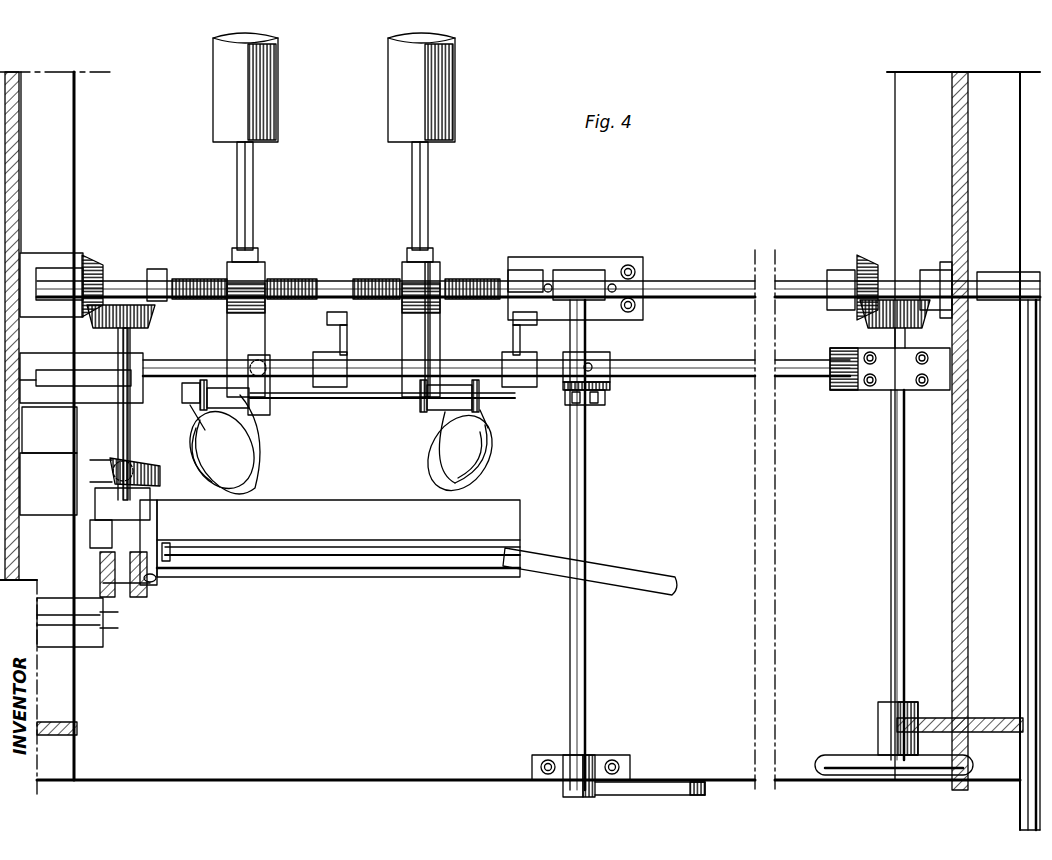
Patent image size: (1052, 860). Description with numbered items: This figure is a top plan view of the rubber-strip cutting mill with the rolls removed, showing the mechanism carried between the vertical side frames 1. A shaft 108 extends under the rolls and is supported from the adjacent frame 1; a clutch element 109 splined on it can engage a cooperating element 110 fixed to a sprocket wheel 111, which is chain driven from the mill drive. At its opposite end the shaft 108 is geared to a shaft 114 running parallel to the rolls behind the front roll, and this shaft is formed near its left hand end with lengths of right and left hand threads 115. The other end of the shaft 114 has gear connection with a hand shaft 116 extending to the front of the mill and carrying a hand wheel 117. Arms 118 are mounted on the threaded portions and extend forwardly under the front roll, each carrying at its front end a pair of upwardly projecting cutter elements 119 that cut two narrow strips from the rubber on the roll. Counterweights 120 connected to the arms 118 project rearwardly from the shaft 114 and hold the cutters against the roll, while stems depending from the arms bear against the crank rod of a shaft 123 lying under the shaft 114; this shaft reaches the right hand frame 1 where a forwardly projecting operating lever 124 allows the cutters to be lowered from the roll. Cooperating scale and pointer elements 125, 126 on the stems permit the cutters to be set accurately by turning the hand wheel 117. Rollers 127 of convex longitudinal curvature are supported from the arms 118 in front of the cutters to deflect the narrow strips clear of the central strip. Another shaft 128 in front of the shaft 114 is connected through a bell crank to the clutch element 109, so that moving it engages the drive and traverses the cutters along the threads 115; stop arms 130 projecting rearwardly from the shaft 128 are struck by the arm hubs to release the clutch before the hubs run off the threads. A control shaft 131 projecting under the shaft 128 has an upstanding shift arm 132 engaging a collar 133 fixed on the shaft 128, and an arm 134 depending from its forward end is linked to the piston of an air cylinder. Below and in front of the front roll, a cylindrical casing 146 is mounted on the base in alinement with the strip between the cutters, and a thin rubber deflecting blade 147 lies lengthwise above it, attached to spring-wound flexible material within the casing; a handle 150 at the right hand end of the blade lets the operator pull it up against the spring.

The vertical side frame 1 is at (18, 177).
The shaft 108 is at (120, 427).
The clutch element 109 is at (113, 503).
The cooperating clutch element 110 is at (150, 530).
The sprocket wheel 111 is at (155, 578).
The shaft 114 is at (122, 287).
The right and left hand threads 115 is at (360, 280).
The hand shaft 116 is at (893, 572).
The hand wheel 117 is at (838, 762).
The arm 118 is at (235, 326).
The cutter element 119 is at (258, 392).
The counterweight 120 is at (272, 106).
The shaft 123 is at (970, 290).
The operating lever 124 is at (1022, 572).
The scale element 125 is at (350, 398).
The pointer element 126 is at (428, 347).
The roller 127 is at (245, 470).
The shaft 128 is at (672, 380).
The stop arm 130 is at (343, 333).
The control shaft 131 is at (585, 690).
The shift arm 132 is at (590, 405).
The collar 133 is at (600, 360).
The arm 134 is at (560, 790).
The cylindrical casing 146 is at (380, 577).
The rubber deflecting blade 147 is at (280, 560).
The handle 150 is at (560, 568).